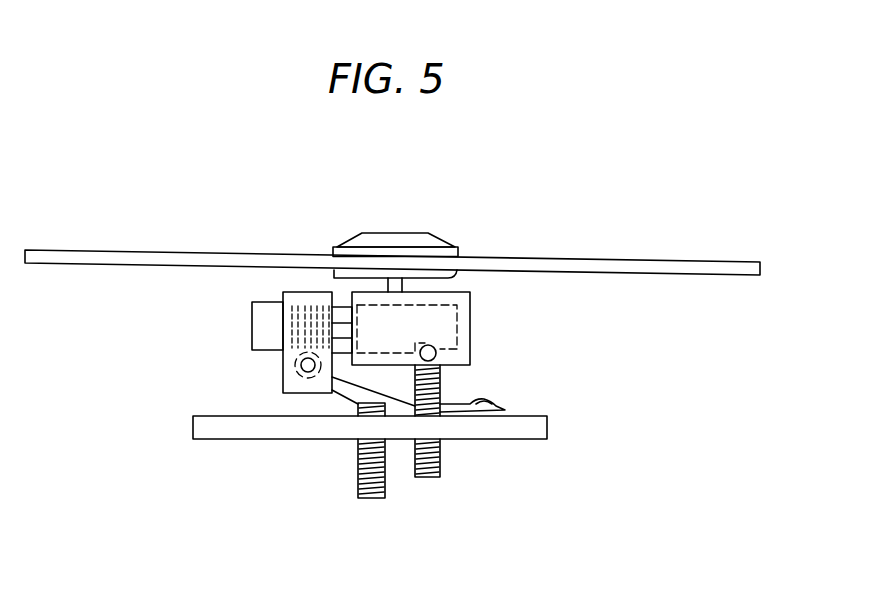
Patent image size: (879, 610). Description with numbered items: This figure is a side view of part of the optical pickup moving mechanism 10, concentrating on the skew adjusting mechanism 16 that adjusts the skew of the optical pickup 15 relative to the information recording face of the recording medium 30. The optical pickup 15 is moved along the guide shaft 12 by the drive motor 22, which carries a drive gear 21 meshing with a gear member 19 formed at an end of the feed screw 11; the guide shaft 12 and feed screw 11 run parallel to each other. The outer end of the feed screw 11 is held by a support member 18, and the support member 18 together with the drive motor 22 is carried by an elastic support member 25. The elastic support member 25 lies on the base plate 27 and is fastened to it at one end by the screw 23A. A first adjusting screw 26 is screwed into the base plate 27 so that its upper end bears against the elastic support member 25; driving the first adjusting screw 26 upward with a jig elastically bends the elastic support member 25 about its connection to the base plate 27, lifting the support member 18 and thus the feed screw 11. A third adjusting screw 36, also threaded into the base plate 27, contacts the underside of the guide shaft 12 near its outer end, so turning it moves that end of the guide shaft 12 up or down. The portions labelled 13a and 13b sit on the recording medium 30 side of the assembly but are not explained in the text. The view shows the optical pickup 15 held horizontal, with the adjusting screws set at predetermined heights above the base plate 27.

The optical pickup moving mechanism 10 is at (703, 226).
The recording medium 30 is at (617, 258).
The head portion 13b is at (398, 232).
The flange portion 13a is at (452, 278).
The drive motor 22 is at (471, 313).
The guide shaft 12 is at (455, 357).
The third adjusting screw 36 is at (441, 458).
The support member 18 is at (298, 292).
The drive gear 21 is at (325, 292).
The optical pickup 15 is at (252, 326).
The gear member 19 is at (279, 381).
The feed screw 11 is at (281, 362).
The skew adjusting mechanism 16 is at (278, 488).
The base plate 27 is at (212, 440).
The elastic support member 25 is at (338, 390).
The screw 23A is at (482, 404).
The first adjusting screw 26 is at (370, 499).